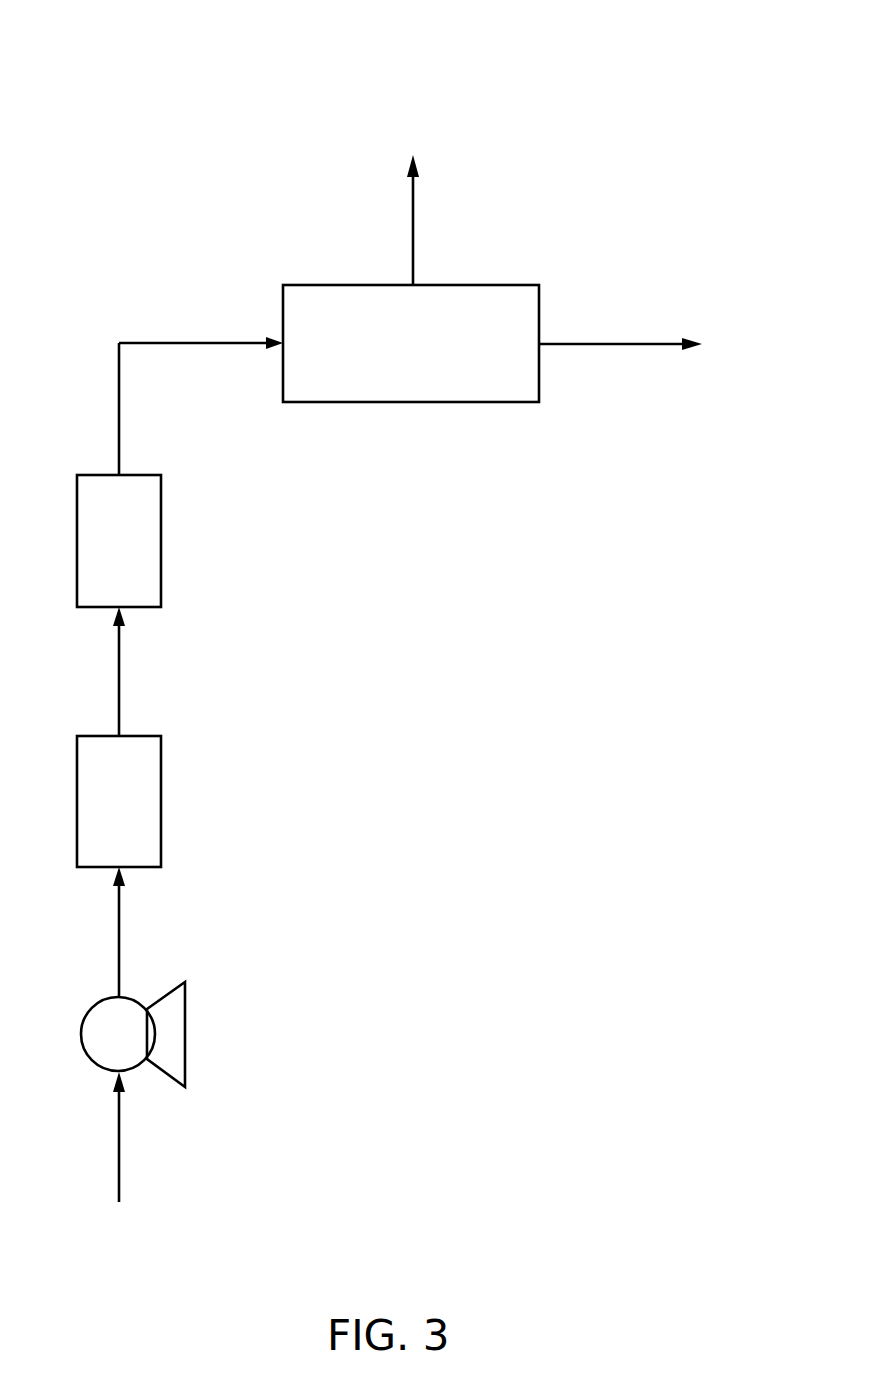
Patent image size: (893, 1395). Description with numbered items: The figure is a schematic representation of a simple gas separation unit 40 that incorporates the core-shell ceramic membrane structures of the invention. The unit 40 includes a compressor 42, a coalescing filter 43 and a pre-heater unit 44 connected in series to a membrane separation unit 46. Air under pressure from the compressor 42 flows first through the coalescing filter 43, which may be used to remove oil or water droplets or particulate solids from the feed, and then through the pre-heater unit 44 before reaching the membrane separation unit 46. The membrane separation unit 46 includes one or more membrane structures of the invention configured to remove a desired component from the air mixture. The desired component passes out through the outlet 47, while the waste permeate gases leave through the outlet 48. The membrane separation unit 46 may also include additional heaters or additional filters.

The gas separation unit 40 is at (662, 60).
The compressor 42 is at (185, 1035).
The coalescing filter 43 is at (161, 800).
The pre-heater unit 44 is at (161, 540).
The membrane separation unit 46 is at (497, 285).
The outlet 47 is at (612, 344).
The outlet 48 is at (412, 227).